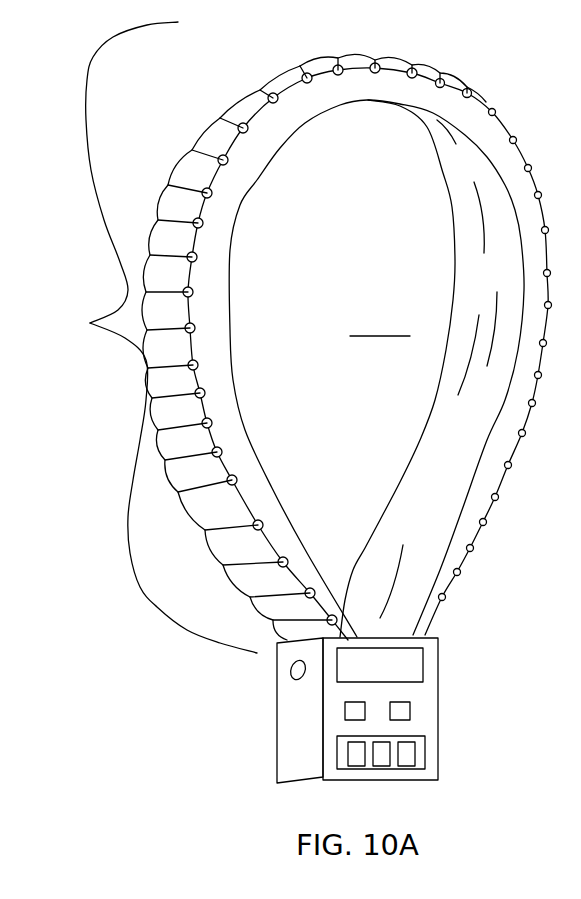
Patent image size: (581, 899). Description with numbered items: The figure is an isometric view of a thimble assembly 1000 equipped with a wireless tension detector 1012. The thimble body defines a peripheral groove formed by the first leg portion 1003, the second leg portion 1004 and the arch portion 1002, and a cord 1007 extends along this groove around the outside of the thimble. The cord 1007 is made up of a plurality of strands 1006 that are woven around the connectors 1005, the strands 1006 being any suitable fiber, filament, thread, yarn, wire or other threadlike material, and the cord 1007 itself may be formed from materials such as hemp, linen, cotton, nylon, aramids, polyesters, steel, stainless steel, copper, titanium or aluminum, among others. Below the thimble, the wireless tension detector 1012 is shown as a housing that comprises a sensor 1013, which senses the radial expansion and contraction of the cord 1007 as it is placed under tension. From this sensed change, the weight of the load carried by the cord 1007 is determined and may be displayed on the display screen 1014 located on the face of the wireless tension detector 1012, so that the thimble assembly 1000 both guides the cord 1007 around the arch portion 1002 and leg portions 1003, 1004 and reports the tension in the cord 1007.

The thimble assembly 1000 is at (382, 323).
The arch portion 1002 is at (360, 88).
The first leg portion 1003 is at (230, 325).
The second leg portion 1004 is at (457, 257).
The connectors 1005 is at (260, 520).
The strands 1006 is at (285, 85).
The cord 1007 is at (140, 337).
The wireless tension detector 1012 is at (286, 752).
The sensor 1013 is at (292, 677).
The display screen 1014 is at (427, 751).